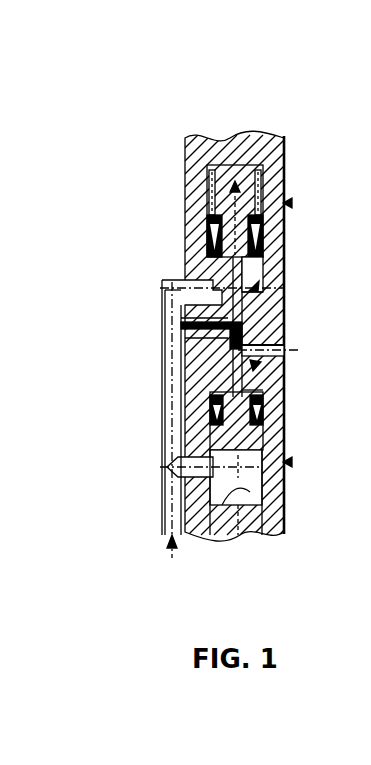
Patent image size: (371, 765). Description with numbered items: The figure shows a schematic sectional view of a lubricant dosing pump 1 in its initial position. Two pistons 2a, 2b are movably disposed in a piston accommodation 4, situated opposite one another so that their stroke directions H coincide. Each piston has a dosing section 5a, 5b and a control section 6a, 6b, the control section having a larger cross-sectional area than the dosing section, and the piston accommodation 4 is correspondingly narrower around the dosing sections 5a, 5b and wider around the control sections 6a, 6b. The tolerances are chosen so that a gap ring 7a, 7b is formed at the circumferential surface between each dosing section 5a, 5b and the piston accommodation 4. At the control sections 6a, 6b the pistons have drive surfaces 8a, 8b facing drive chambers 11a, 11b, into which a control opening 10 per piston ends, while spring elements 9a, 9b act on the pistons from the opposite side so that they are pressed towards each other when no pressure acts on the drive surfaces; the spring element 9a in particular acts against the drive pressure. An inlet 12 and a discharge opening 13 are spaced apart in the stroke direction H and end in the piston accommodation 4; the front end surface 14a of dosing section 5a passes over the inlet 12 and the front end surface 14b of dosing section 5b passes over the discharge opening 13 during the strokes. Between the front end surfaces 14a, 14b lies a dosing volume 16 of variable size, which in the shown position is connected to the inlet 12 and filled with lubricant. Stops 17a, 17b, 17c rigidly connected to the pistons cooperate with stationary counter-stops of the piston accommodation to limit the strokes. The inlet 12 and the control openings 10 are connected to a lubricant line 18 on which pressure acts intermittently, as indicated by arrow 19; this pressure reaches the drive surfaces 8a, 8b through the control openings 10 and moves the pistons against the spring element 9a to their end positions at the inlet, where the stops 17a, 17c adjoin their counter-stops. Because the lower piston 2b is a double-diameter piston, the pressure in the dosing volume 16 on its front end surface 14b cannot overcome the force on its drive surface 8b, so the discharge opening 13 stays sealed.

The lubricant dosing pump 1 is at (145, 138).
The piston 2a is at (257, 165).
The piston 2b is at (265, 442).
The piston accommodation 4 is at (286, 538).
The dosing section 5a is at (263, 303).
The dosing section 5b is at (264, 372).
The control section 6a is at (292, 203).
The control section 6b is at (292, 462).
The gap ring 7a is at (262, 320).
The gap ring 7b is at (264, 390).
The drive surface 8a is at (264, 255).
The drive surface 8b is at (268, 476).
The spring element 9a is at (266, 190).
The spring element 9b is at (218, 540).
The control opening 10 is at (185, 279).
The drive chamber 11a is at (262, 285).
The drive chamber 11b is at (256, 538).
The inlet 12 is at (262, 240).
The discharge opening 13 is at (260, 350).
The front end surface 14a is at (200, 320).
The front end surface 14b is at (215, 338).
The dosing volume 16 is at (244, 332).
The stop 17a is at (237, 180).
The stop 17b is at (190, 278).
The stop 17c is at (264, 406).
The lubricant line 18 is at (162, 527).
The arrow 19 is at (170, 560).
The stroke direction H is at (238, 538).